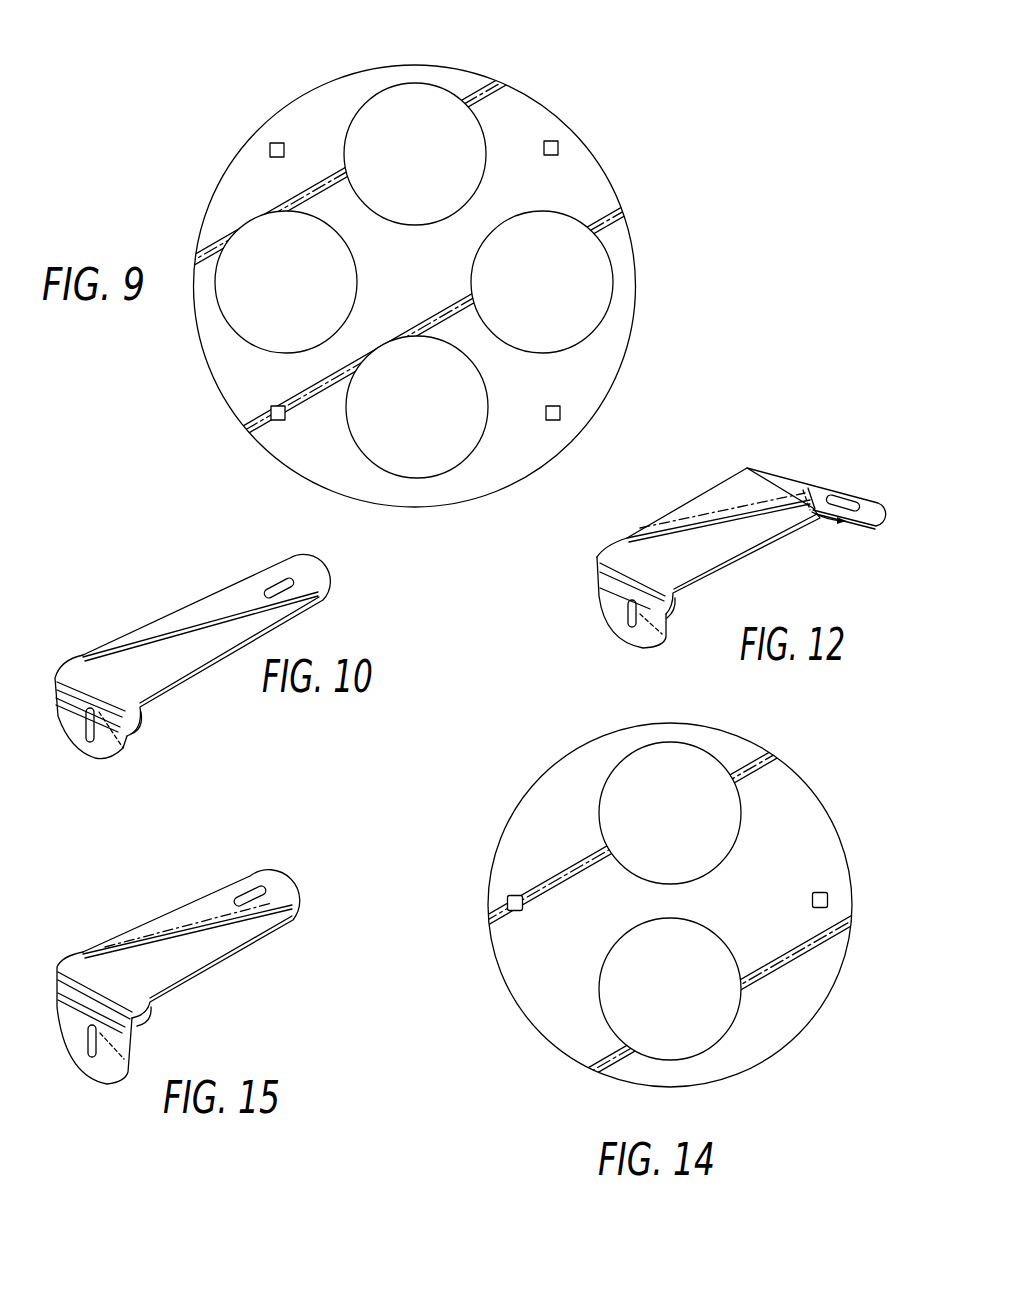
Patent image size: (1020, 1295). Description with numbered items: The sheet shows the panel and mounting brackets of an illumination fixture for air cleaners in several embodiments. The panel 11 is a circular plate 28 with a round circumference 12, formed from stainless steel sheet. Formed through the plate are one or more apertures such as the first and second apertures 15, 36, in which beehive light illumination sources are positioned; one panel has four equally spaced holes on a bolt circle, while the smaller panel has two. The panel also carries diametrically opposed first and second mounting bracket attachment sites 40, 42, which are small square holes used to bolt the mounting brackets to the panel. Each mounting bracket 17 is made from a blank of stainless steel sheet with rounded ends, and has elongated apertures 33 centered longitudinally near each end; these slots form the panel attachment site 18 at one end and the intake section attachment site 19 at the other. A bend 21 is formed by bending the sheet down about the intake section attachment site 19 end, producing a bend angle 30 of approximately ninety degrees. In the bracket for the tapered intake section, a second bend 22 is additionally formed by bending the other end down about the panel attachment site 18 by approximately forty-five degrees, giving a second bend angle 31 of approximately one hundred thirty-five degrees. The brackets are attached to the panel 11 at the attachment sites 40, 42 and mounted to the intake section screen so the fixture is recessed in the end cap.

In FIG. 9, the panel 11 is at (518, 61).
In FIG. 14, the panel 11 is at (516, 1006).
In FIG. 9, the round circumference 12 is at (542, 103).
In FIG. 14, the round circumference 12 is at (560, 1050).
In FIG. 9, the first aperture 15 is at (613, 268).
In FIG. 14, the first aperture 15 is at (597, 827).
In FIG. 10, the mounting bracket 17 is at (158, 610).
In FIG. 12, the mounting bracket 17 is at (682, 503).
In FIG. 15, the mounting bracket 17 is at (230, 958).
In FIG. 10, the panel attachment site 18 is at (268, 583).
In FIG. 12, the panel attachment site 18 is at (838, 493).
In FIG. 15, the panel attachment site 18 is at (237, 899).
In FIG. 10, the intake section attachment site 19 is at (93, 742).
In FIG. 12, the intake section attachment site 19 is at (622, 633).
In FIG. 15, the intake section attachment site 19 is at (102, 1058).
In FIG. 10, the bend 21 is at (83, 683).
In FIG. 12, the bend 21 is at (642, 577).
In FIG. 15, the bend 21 is at (102, 993).
In FIG. 12, the second bend 22 is at (766, 470).
In FIG. 9, the circular plate 28 is at (243, 178).
In FIG. 14, the circular plate 28 is at (540, 788).
In FIG. 10, the bend angle 30 is at (147, 723).
In FIG. 12, the bend angle 30 is at (684, 613).
In FIG. 15, the bend angle 30 is at (147, 1021).
In FIG. 12, the second bend angle 31 is at (820, 529).
In FIG. 10, the elongated apertures 33 is at (278, 570).
In FIG. 12, the elongated apertures 33 is at (844, 498).
In FIG. 15, the elongated apertures 33 is at (256, 886).
In FIG. 9, the second aperture 36 is at (346, 130).
In FIG. 14, the second aperture 36 is at (716, 1050).
In FIG. 9, the first mounting bracket attachment site 40 is at (561, 147).
In FIG. 14, the first mounting bracket attachment site 40 is at (822, 911).
In FIG. 9, the second mounting bracket attachment site 42 is at (271, 412).
In FIG. 14, the second mounting bracket attachment site 42 is at (512, 911).